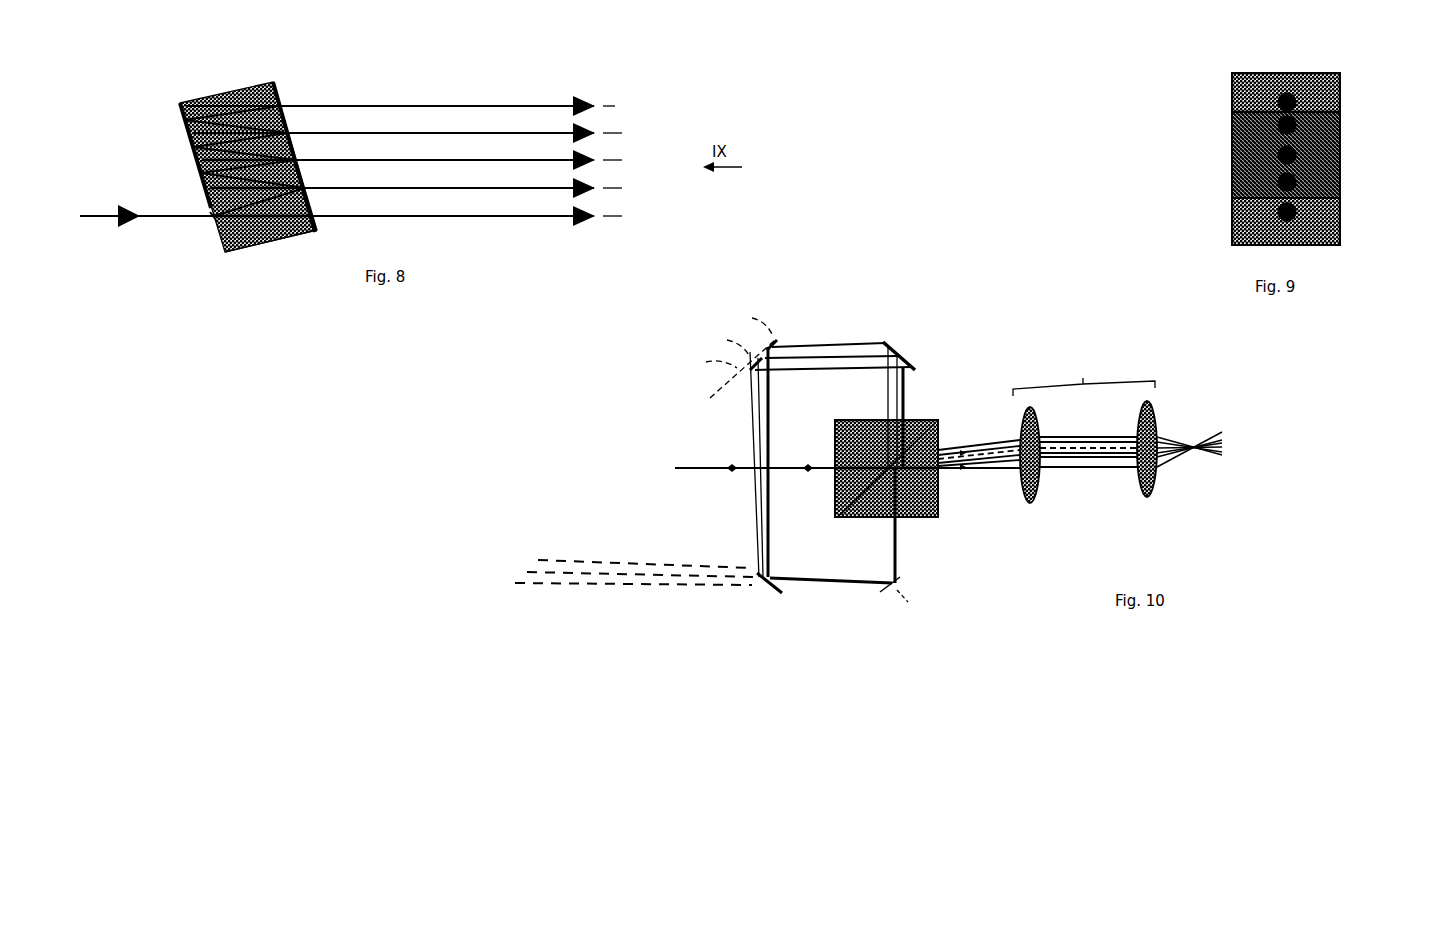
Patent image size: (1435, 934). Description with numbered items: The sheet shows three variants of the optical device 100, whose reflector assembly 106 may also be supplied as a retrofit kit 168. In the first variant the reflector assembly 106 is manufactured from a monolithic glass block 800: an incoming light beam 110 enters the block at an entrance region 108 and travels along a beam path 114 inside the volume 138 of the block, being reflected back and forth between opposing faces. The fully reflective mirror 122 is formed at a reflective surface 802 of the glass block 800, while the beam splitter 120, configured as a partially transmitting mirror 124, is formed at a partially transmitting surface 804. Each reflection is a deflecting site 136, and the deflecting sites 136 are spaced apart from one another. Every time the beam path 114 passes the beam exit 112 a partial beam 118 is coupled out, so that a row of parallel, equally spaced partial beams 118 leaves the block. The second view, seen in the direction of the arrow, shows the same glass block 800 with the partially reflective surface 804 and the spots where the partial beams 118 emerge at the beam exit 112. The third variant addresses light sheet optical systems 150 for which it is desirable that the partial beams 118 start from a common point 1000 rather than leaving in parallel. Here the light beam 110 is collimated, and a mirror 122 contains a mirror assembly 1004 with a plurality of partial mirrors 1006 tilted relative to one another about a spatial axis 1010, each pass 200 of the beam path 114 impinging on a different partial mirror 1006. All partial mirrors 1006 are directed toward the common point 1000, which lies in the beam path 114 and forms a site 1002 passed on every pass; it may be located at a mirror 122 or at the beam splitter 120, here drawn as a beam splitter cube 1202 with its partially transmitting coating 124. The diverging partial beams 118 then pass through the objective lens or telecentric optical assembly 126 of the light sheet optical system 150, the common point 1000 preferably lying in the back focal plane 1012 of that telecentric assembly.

In FIG. 8, the optical device 100 is at (367, 163).
In FIG. 9, the optical device 100 is at (1239, 172).
In FIG. 10, the optical device 100 is at (868, 436).
In FIG. 8, the reflector assembly 106 is at (367, 163).
In FIG. 9, the reflector assembly 106 is at (1239, 172).
In FIG. 10, the reflector assembly 106 is at (868, 436).
In FIG. 8, the retrofit kit 168 is at (183, 81).
In FIG. 9, the retrofit kit 168 is at (1216, 74).
In FIG. 10, the retrofit kit 168 is at (889, 285).
In FIG. 8, the entrance point 108 is at (198, 224).
In FIG. 8, the light beam 110 is at (173, 215).
In FIG. 10, the light beam 110 is at (692, 468).
In FIG. 8, the beam exit 112 is at (327, 151).
In FIG. 9, the beam exit 112 is at (1268, 106).
In FIG. 8, the beam path 114 is at (285, 222).
In FIG. 10, the beam path 114 is at (825, 374).
In FIG. 8, the partial beam 118 is at (420, 147).
In FIG. 9, the partial beam 118 is at (1296, 102).
In FIG. 10, the partial beam 118 is at (955, 446).
In FIG. 8, the beam splitter 120 is at (317, 148).
In FIG. 8, the fully reflective mirror 122 is at (154, 155).
In FIG. 10, the fully reflective mirror 122 is at (783, 325).
In FIG. 8, the partially transmitting mirror 124 is at (317, 148).
In FIG. 10, the partially transmitting mirror 124 is at (912, 432).
In FIG. 10, the objective lens 126 is at (1087, 417).
In FIG. 8, the deflecting site 136 is at (217, 161).
In FIG. 8, the volume 138 is at (253, 200).
In FIG. 10, the light sheet optical system 150 is at (1088, 367).
In FIG. 10, the pass 200 is at (857, 347).
In FIG. 8, the glass block 800 is at (256, 233).
In FIG. 9, the glass block 800 is at (1318, 233).
In FIG. 8, the reflective surface 802 is at (188, 148).
In FIG. 8, the partially transmitting surface 804 is at (298, 138).
In FIG. 9, the partially transmitting surface 804 is at (1250, 175).
In FIG. 10, the common point 1000 is at (832, 525).
In FIG. 10, the site commonly passed in the beam path 1002 is at (884, 565).
In FIG. 10, the mirror assembly 1004 is at (765, 313).
In FIG. 10, the partial mirror 1006 is at (753, 320).
In FIG. 10, the spatial axis 1010 is at (712, 396).
In FIG. 10, the back focal plane of the telecentric optical assembly 1012 is at (922, 601).
In FIG. 10, the beam splitter cube 1202 is at (925, 428).